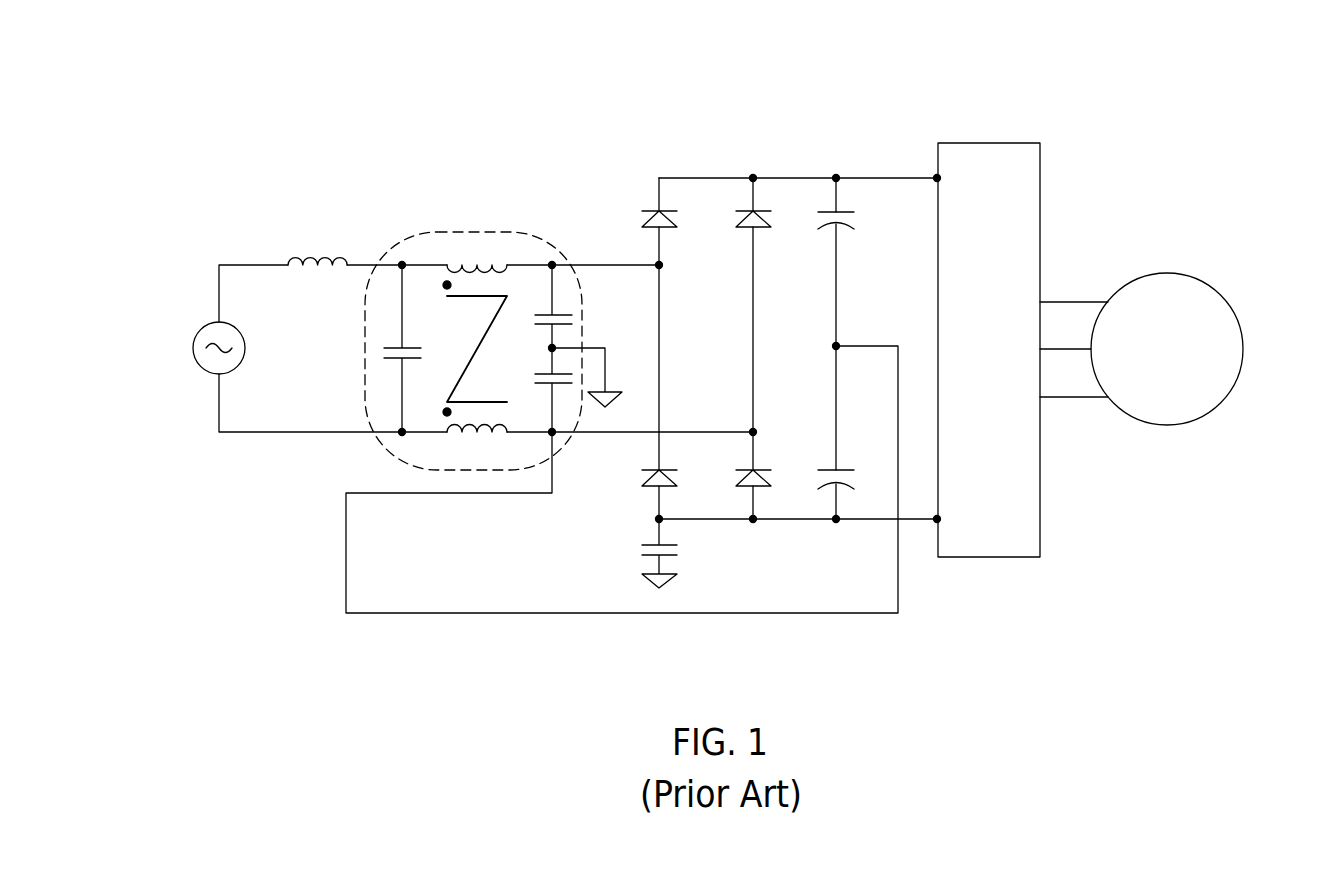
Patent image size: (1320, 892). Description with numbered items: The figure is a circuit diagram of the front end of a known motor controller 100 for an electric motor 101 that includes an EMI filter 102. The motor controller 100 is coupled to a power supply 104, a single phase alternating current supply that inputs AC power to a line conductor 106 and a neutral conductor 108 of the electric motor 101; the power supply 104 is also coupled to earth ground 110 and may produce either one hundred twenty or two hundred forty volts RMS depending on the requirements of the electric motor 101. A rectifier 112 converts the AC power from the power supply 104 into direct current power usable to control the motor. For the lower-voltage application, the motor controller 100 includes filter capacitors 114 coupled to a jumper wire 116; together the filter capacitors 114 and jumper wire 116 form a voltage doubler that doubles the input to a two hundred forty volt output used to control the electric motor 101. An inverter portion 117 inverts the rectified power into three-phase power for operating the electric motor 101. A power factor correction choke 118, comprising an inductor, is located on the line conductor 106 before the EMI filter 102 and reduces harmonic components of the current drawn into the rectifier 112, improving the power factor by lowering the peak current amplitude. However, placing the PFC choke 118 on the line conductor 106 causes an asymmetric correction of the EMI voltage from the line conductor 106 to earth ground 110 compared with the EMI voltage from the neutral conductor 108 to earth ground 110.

The motor controller 100 is at (377, 90).
The electric motor 101 is at (1141, 349).
The EMI filter 102 is at (503, 232).
The power supply 104 is at (197, 335).
The line conductor 106 is at (218, 280).
The neutral conductor 108 is at (218, 418).
The earth ground 110 is at (659, 590).
The rectifier 112 is at (704, 156).
The filter capacitors 114 is at (848, 210).
The jumper wire 116 is at (345, 518).
The inverter portion 117 is at (989, 350).
The PFC choke 118 is at (323, 252).